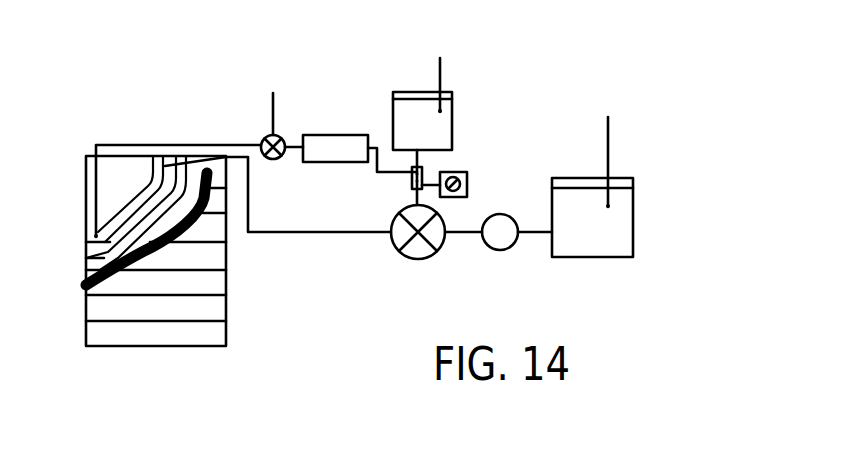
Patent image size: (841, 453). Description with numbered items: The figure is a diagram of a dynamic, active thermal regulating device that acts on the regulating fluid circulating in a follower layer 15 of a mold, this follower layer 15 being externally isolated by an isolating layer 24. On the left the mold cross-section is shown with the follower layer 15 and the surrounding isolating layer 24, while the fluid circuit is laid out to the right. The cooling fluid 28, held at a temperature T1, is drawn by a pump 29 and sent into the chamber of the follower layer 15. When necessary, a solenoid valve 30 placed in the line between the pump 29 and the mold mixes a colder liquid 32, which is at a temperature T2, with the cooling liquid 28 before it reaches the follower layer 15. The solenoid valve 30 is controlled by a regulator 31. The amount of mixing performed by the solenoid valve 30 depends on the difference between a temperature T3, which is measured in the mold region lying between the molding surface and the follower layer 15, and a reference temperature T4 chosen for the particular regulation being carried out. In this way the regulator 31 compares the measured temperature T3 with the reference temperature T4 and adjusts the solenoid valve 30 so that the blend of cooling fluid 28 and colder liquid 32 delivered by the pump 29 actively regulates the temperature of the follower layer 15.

The follower layer 15 is at (180, 176).
The isolating layer 24 is at (203, 213).
The cooling fluid 28 is at (577, 240).
The pump 29 is at (500, 235).
The solenoid valve 30 is at (420, 252).
The regulator 31 is at (332, 138).
The colder liquid 32 is at (435, 130).
The temperature of the cooling fluid T1 is at (626, 154).
The temperature of the colder liquid T2 is at (459, 75).
The measured mold temperature T3 is at (177, 171).
The reference temperature T4 is at (286, 113).